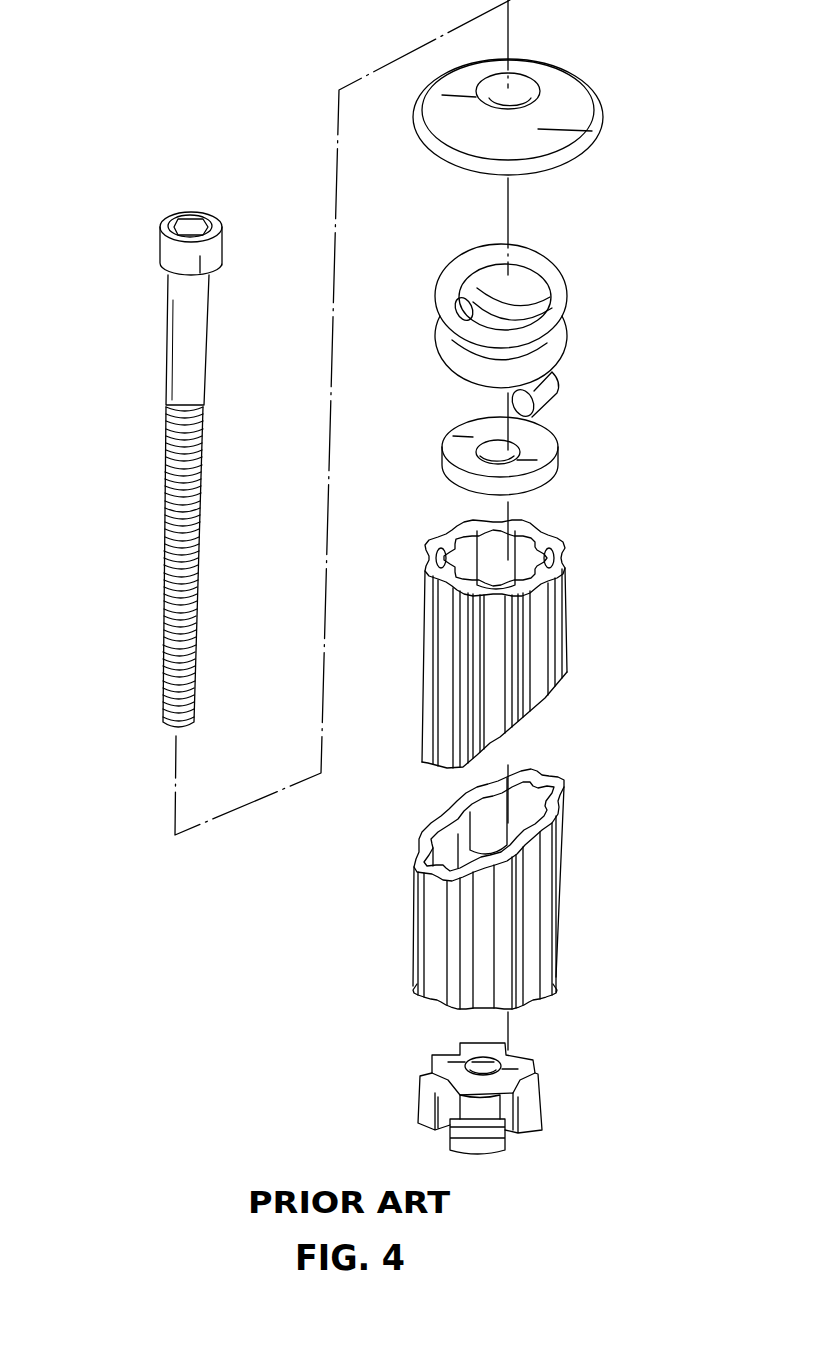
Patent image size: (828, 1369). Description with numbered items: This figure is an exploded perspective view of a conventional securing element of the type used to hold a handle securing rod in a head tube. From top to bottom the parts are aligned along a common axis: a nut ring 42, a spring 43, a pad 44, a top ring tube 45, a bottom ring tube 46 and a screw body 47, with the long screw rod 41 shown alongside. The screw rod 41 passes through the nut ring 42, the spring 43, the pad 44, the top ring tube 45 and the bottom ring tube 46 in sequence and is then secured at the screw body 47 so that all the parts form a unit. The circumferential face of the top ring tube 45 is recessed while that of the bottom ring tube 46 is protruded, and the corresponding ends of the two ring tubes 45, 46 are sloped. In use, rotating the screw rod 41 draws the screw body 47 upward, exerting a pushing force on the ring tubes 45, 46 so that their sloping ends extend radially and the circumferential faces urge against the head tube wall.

The screw rod 41 is at (150, 543).
The nut ring 42 is at (601, 143).
The spring 43 is at (570, 352).
The pad 44 is at (563, 462).
The ring tube 45 is at (572, 615).
The bottom ring tube 46 is at (568, 902).
The screw body 47 is at (555, 1086).